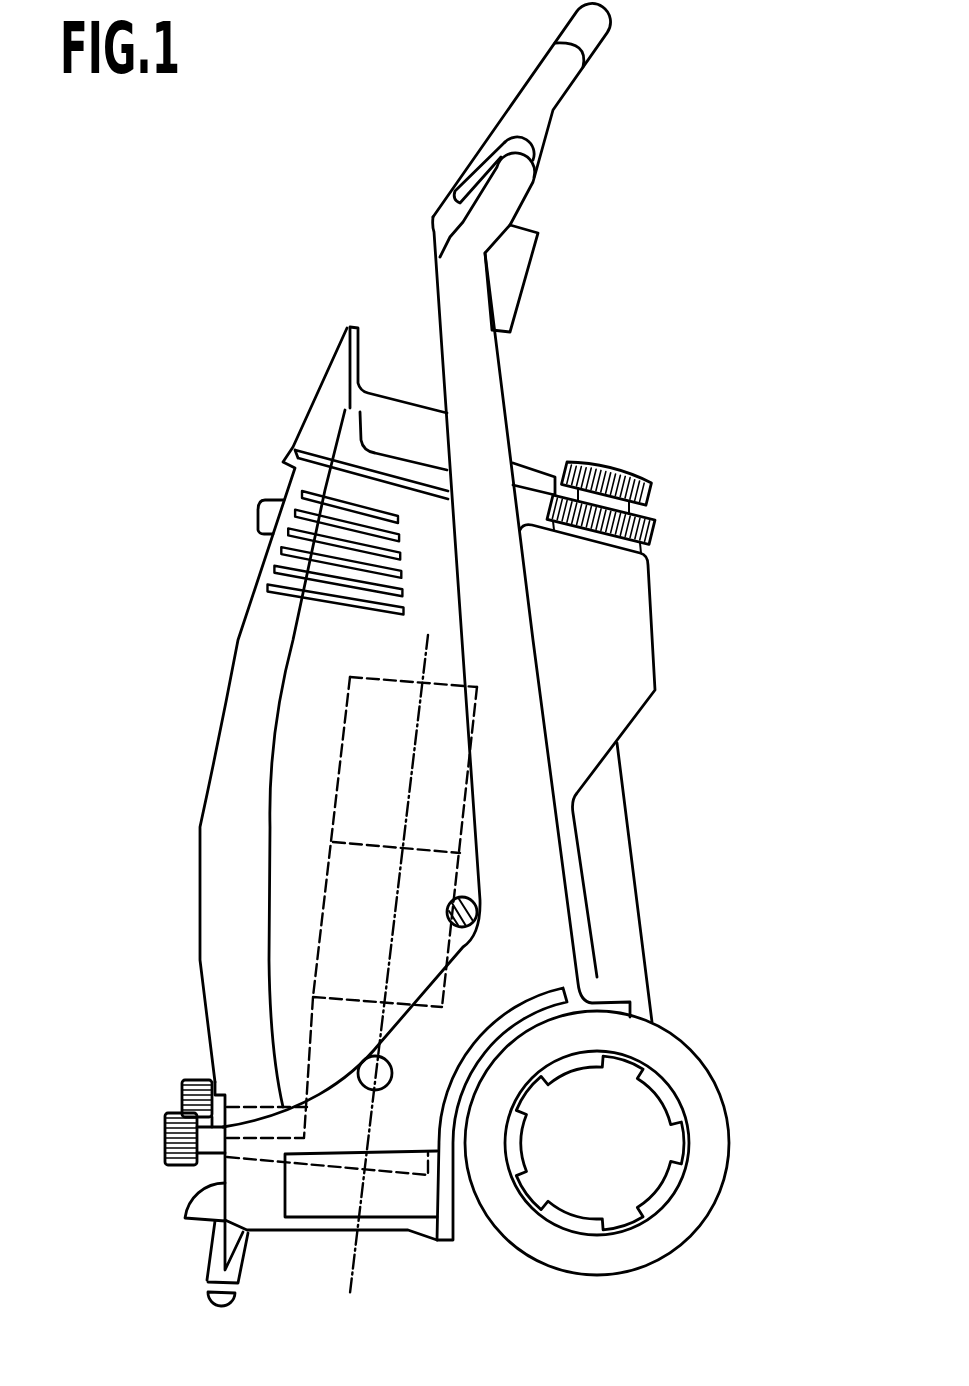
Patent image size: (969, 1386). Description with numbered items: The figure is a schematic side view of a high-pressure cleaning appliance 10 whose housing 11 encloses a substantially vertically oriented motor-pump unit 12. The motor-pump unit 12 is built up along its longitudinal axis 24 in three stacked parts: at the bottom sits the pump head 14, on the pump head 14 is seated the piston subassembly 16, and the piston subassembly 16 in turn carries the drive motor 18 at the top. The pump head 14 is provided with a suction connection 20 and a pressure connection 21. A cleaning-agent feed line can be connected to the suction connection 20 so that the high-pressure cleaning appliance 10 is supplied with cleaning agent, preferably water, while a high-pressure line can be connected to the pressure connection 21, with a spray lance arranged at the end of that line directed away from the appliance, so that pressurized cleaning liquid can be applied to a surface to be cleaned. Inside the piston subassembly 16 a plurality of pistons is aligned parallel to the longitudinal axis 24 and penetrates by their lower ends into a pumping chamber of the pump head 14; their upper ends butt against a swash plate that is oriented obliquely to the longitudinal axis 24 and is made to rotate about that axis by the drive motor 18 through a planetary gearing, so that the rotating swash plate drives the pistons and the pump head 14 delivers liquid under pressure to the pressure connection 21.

The high-pressure cleaning appliance 10 is at (302, 273).
The housing 11 is at (657, 613).
The motor-pump unit 12 is at (345, 700).
The pump head 14 is at (338, 1043).
The piston subassembly 16 is at (350, 920).
The drive motor 18 is at (355, 807).
The suction connection 20 is at (182, 1100).
The pressure connection 21 is at (165, 1147).
The longitudinal axis 24 is at (360, 1258).